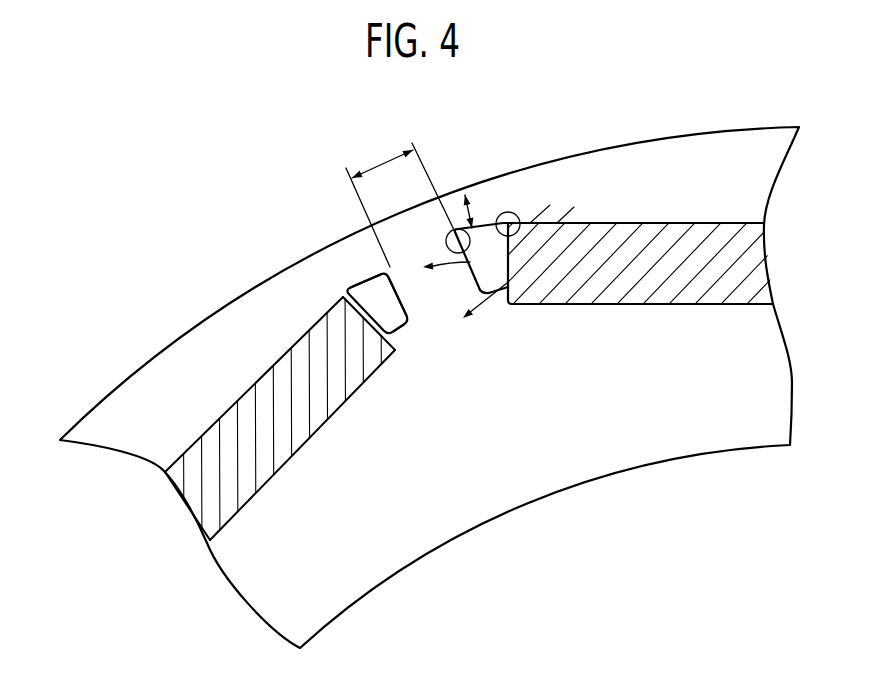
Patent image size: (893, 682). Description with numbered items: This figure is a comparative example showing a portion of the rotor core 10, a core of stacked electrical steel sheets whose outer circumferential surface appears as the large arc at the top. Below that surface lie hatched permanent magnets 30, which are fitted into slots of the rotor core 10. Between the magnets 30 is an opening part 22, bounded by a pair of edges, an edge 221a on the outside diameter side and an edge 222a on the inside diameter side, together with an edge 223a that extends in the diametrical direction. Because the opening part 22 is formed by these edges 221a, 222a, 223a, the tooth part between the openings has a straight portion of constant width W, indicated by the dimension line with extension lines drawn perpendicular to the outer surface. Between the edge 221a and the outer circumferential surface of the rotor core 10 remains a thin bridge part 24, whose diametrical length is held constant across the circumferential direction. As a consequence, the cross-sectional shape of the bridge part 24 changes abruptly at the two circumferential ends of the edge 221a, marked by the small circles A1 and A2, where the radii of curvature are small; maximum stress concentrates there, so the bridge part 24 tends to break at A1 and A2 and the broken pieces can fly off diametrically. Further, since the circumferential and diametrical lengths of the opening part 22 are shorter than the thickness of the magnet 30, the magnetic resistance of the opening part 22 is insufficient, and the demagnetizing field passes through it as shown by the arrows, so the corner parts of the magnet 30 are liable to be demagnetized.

The rotor core 10 is at (716, 128).
The permanent magnet 30 is at (265, 432).
The opening part 22 is at (377, 310).
The edge of the outside diameter side 221a is at (365, 281).
The edge of the inside diameter side 222a is at (408, 330).
The edge extending in the diametrical direction 223a is at (410, 303).
The bridge part 24 is at (455, 218).
The end of the edge 221a A1 is at (446, 242).
The end of the edge 221a A2 is at (509, 212).
The tooth part width W is at (401, 199).